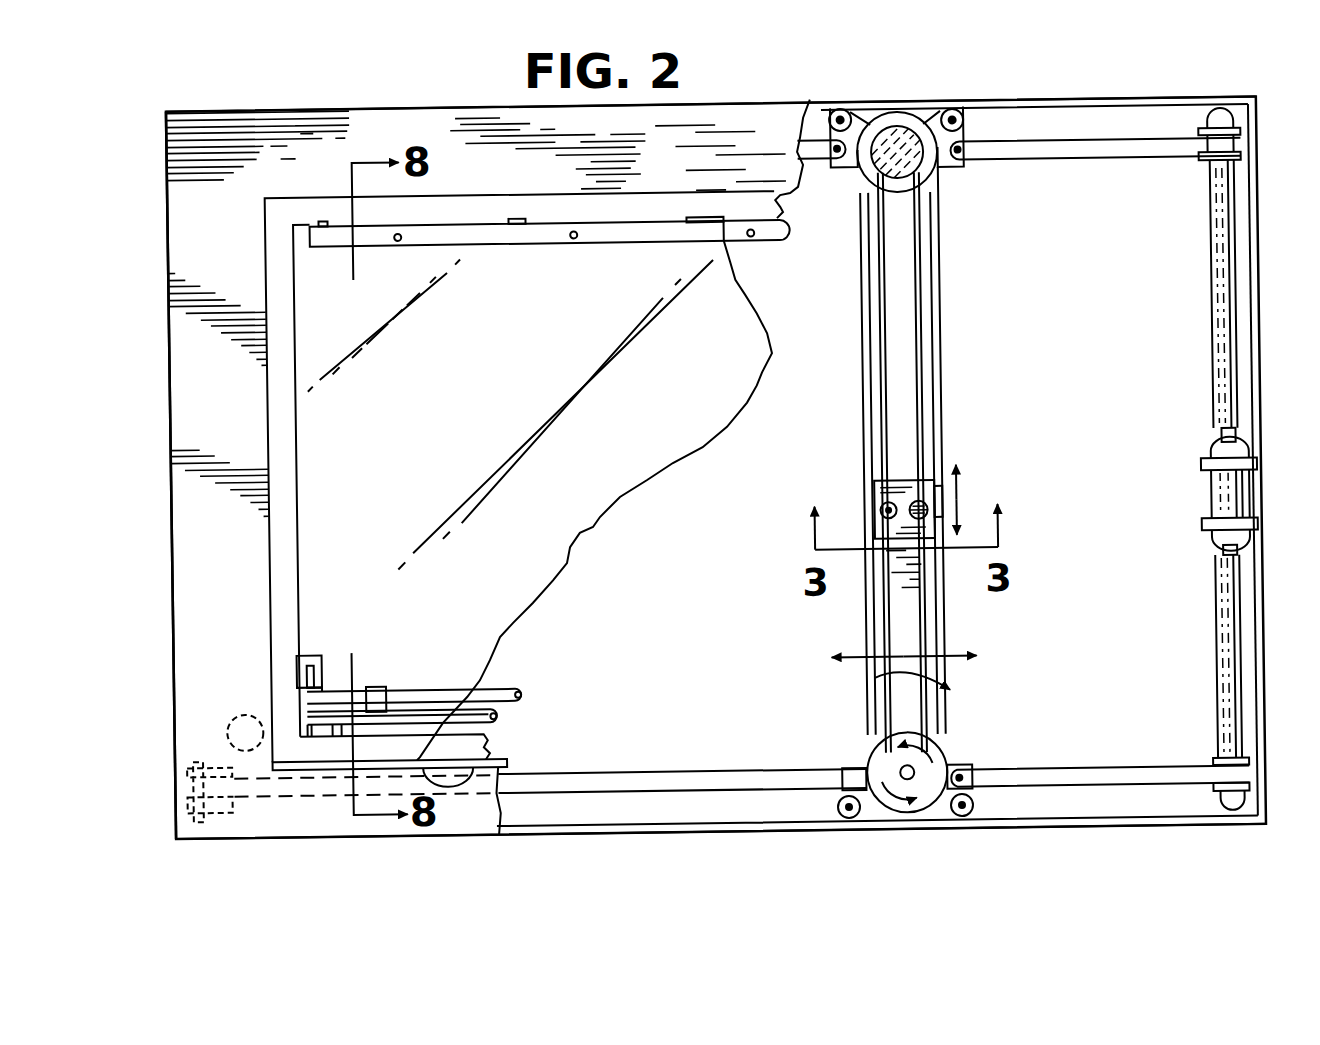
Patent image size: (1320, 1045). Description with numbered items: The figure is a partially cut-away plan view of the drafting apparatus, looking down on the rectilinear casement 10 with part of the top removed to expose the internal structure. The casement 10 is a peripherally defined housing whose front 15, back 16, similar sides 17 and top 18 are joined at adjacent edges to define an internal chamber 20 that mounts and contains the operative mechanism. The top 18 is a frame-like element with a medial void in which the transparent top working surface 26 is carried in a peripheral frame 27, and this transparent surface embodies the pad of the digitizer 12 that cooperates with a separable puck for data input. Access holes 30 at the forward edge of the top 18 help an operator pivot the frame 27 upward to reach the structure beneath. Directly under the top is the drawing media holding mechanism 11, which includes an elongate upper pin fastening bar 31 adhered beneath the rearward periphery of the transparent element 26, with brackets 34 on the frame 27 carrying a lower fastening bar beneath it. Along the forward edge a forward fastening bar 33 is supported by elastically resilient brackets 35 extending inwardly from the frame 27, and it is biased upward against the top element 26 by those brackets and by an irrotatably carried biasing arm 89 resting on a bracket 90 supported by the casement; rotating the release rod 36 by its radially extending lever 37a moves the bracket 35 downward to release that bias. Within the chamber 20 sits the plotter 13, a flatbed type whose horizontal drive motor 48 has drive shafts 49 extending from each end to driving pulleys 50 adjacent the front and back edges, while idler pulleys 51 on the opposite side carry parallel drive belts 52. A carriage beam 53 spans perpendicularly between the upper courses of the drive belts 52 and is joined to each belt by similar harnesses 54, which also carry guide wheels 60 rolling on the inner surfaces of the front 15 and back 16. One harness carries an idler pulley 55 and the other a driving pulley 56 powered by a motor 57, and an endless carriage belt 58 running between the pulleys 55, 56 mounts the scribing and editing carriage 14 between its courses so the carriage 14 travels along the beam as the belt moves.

The rectilinear casement 10 is at (1062, 100).
The drawing media holding mechanism 11 is at (787, 213).
The digitizer 12 is at (597, 526).
The plotter 13 is at (942, 381).
The scribing and editing carriage 14 is at (898, 480).
The front 15 is at (580, 831).
The back 16 is at (813, 103).
The sides 17 is at (169, 285).
The top 18 is at (352, 135).
The internal chamber 20 is at (1098, 681).
The top working surface 26 is at (736, 363).
The peripheral frame 27 is at (649, 206).
The access holes 30 is at (495, 805).
The upper pin fastening bar 31 is at (580, 238).
The forward fastening bar 33 is at (515, 697).
The brackets 34 is at (324, 216).
The brackets 35 is at (380, 705).
The release rod 36 is at (494, 719).
The radially extending lever 37a is at (329, 732).
The horizontal drive motor 48 is at (1222, 499).
The drive shafts 49 is at (1224, 305).
The driving pulleys 50 is at (1204, 167).
The idler pulleys 51 is at (208, 760).
The drive belts 52 is at (804, 149).
The carriage beam 53 is at (904, 630).
The harnesses 54 is at (947, 168).
The idler pulley 55 is at (931, 760).
The driving pulley 56 is at (892, 137).
The motor 57 is at (904, 147).
The endless carriage belt 58 is at (928, 686).
The guide wheels 60 is at (833, 809).
The biasing arm 89 is at (321, 677).
The bracket 90 is at (305, 654).